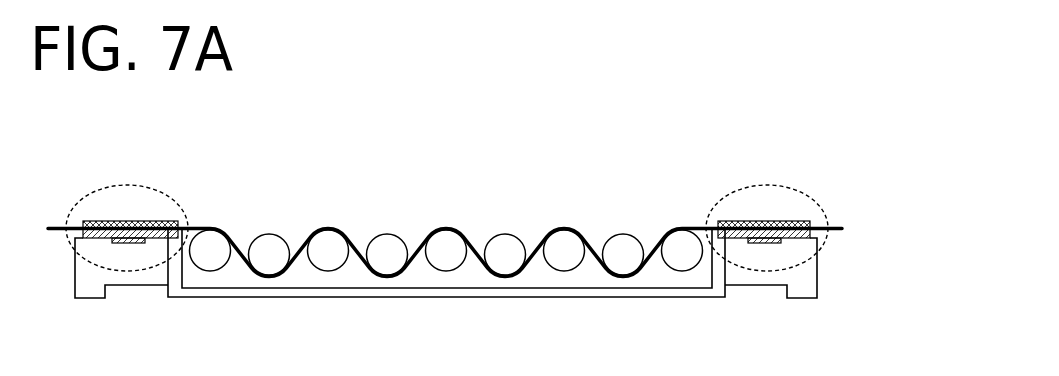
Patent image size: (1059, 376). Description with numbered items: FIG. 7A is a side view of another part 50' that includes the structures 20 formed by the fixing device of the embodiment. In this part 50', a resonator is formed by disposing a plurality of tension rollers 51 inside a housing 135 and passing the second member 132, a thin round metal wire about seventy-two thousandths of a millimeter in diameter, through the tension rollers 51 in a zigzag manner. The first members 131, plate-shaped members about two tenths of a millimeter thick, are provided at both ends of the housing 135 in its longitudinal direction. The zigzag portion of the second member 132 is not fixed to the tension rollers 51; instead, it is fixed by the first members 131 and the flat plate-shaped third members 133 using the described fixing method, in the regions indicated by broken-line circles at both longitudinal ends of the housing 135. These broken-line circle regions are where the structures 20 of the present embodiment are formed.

The part 50' is at (460, 185).
The structure 20 is at (102, 188).
The tension roller 51 is at (442, 242).
The first member 131 is at (806, 238).
The second member 132 is at (293, 230).
The third member 133 is at (722, 222).
The housing 135 is at (243, 297).